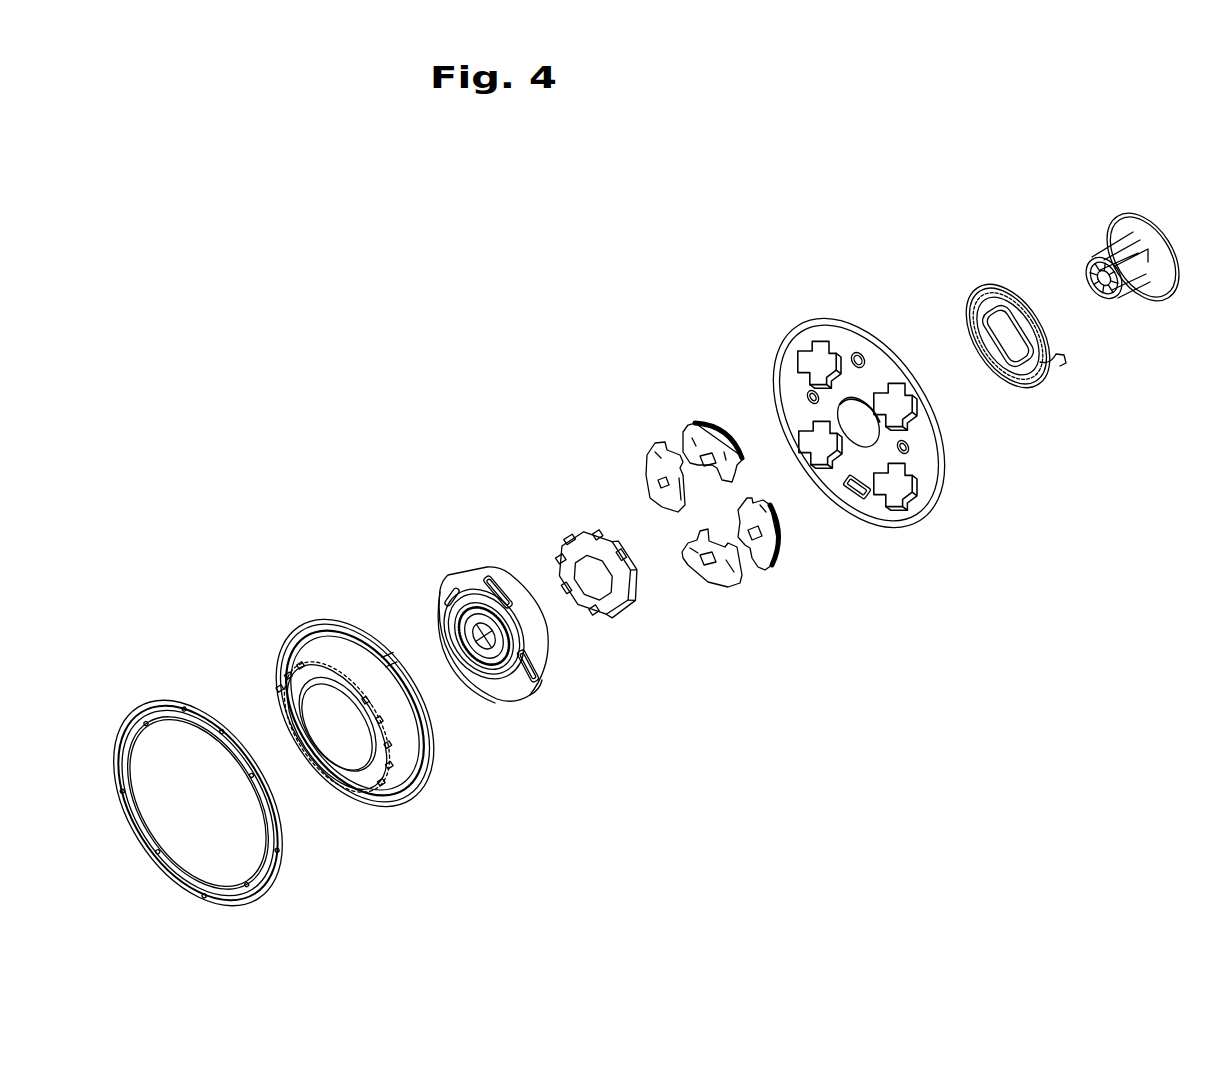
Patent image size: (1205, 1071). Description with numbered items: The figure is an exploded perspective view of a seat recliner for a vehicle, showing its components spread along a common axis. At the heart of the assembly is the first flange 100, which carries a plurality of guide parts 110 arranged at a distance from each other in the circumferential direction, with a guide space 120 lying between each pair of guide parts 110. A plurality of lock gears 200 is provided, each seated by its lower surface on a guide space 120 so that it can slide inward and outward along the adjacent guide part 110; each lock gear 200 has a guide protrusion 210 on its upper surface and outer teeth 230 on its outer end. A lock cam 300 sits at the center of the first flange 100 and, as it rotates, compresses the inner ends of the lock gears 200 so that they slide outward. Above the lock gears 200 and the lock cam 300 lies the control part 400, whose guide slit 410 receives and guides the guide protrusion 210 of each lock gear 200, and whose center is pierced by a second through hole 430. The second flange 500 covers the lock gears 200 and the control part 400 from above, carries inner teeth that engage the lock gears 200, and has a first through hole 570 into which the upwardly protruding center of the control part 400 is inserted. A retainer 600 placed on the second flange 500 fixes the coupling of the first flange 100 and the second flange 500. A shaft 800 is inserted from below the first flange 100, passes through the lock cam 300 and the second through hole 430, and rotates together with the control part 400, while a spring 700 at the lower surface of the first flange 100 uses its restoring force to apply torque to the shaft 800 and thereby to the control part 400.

The first flange 100 is at (839, 428).
The guide part 110 is at (815, 362).
The guide space 120 is at (800, 376).
The lock gear 200 is at (730, 514).
The guide protrusion 210 is at (702, 574).
The outer teeth 230 is at (690, 428).
The lock cam 300 is at (568, 537).
The control part 400 is at (457, 582).
The guide slit 410 is at (494, 575).
The second through hole 430 is at (497, 690).
The second flange 500 is at (312, 642).
The first through hole 570 is at (347, 729).
The retainer 600 is at (163, 712).
The spring 700 is at (980, 286).
The shaft 800 is at (1150, 297).